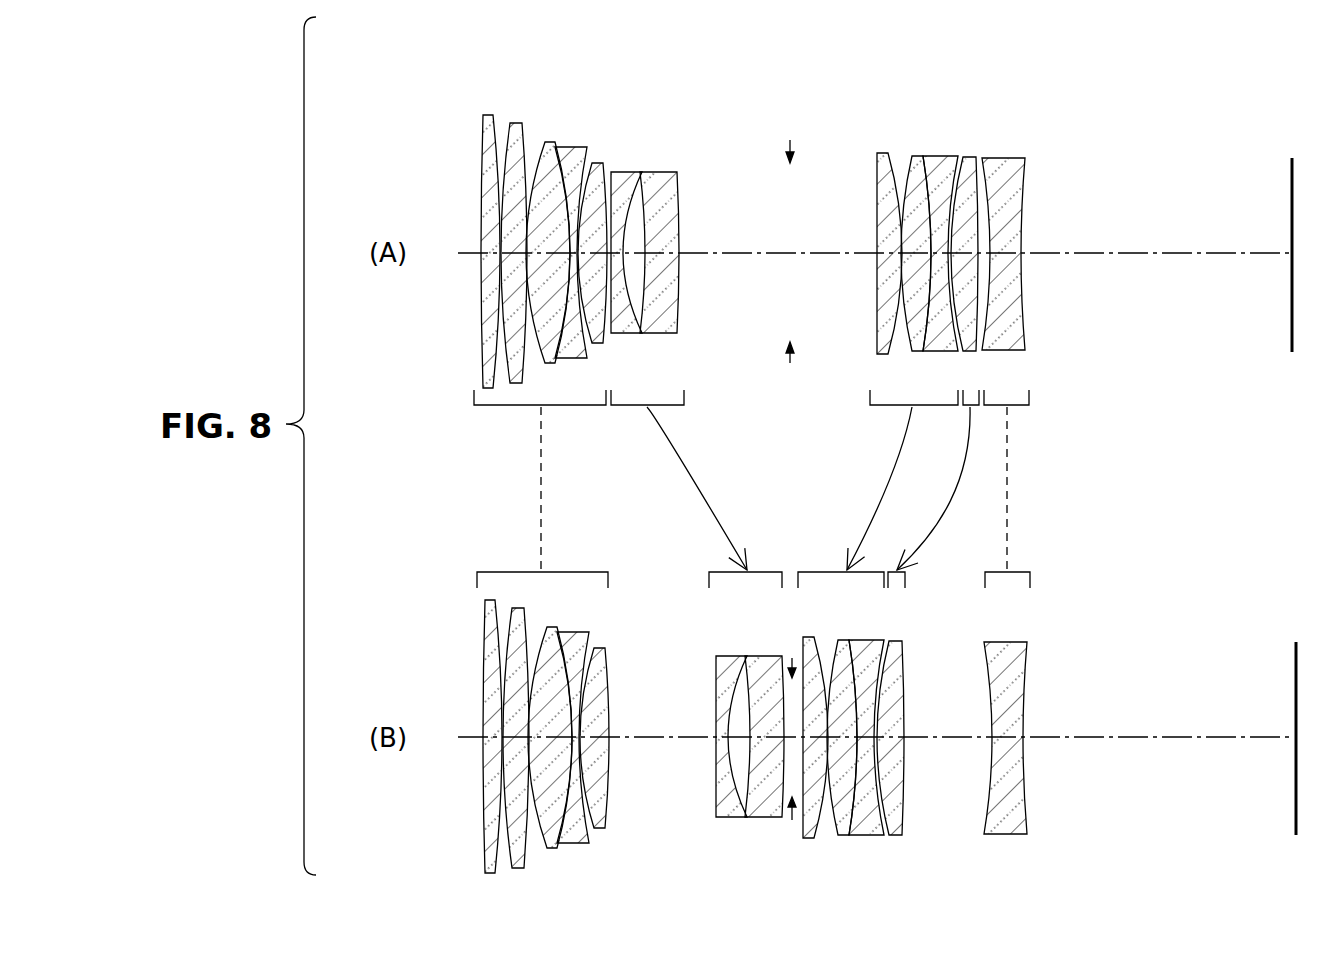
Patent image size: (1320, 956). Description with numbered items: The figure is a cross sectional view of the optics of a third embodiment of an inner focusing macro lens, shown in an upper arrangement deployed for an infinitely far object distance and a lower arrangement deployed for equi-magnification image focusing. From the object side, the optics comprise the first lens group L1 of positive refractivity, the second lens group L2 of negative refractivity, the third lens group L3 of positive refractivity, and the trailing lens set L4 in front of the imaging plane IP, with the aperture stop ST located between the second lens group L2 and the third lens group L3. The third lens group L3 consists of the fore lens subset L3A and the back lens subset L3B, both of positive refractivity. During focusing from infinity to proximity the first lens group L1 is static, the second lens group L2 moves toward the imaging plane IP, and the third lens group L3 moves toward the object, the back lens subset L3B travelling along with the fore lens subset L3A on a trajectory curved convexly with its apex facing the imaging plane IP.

The first lens group L1 is at (605, 112).
The second lens group L2 is at (683, 112).
The third lens group L3 is at (980, 68).
The fore lens subset of the third lens group L3A is at (958, 112).
The back lens subset of the third lens group L3B is at (978, 112).
The trailing lens set L4 is at (983, 112).
The aperture stop ST is at (790, 141).
The imaging plane IP is at (1291, 172).